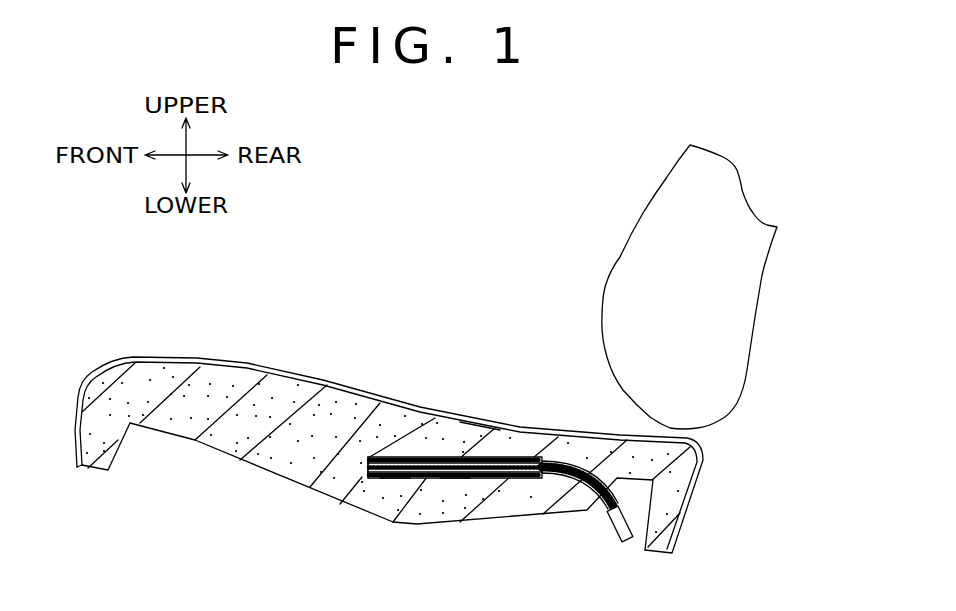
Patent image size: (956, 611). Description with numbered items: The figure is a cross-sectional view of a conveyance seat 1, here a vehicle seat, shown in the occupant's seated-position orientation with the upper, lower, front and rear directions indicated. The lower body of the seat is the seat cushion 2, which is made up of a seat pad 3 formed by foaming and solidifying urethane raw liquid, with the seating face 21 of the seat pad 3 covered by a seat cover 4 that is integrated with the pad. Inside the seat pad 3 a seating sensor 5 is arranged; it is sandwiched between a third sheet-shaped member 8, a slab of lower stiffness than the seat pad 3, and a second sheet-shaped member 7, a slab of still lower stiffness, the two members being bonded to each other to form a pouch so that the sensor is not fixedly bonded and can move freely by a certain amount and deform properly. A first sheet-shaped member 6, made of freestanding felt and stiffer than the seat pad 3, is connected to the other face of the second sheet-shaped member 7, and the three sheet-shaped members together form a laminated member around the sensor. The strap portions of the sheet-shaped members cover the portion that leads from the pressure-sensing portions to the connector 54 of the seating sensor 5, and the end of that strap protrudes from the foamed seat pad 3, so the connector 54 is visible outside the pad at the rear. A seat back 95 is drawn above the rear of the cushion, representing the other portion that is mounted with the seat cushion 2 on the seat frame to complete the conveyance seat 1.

The conveyance seat 1 is at (458, 194).
The seat cushion 2 is at (278, 346).
The seat pad 3 is at (98, 418).
The seat cover 4 is at (168, 357).
The seating sensor 5 is at (368, 468).
The first sheet-shaped member 6 is at (453, 478).
The second sheet-shaped member 7 is at (395, 478).
The third sheet-shaped member 8 is at (408, 457).
The seating face 21 is at (480, 420).
The connector 54 is at (610, 515).
The seat back 95 is at (732, 290).